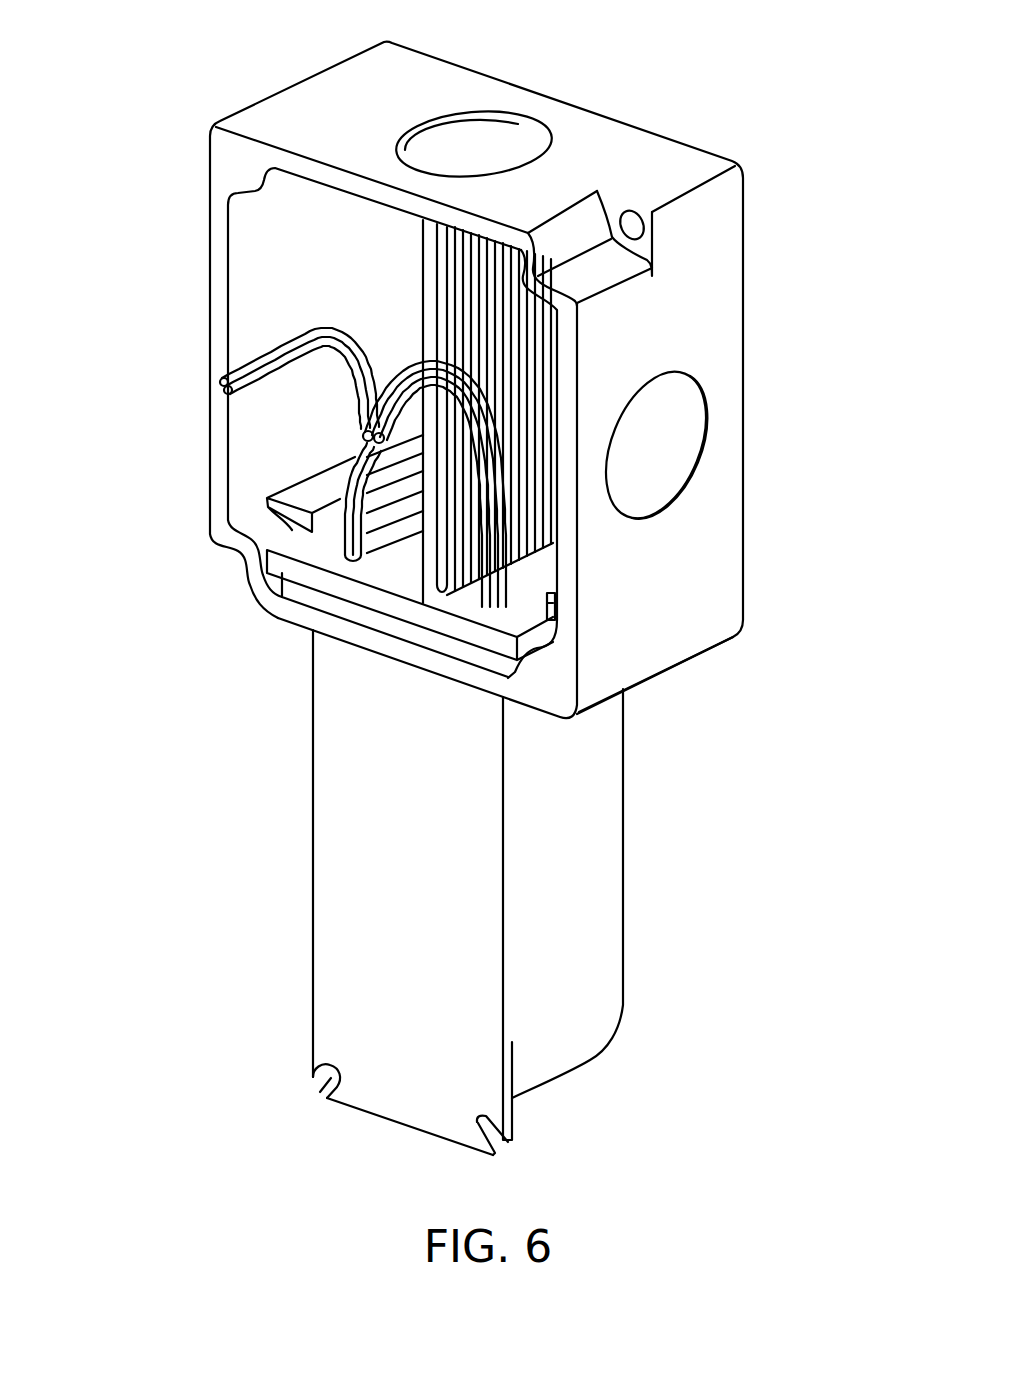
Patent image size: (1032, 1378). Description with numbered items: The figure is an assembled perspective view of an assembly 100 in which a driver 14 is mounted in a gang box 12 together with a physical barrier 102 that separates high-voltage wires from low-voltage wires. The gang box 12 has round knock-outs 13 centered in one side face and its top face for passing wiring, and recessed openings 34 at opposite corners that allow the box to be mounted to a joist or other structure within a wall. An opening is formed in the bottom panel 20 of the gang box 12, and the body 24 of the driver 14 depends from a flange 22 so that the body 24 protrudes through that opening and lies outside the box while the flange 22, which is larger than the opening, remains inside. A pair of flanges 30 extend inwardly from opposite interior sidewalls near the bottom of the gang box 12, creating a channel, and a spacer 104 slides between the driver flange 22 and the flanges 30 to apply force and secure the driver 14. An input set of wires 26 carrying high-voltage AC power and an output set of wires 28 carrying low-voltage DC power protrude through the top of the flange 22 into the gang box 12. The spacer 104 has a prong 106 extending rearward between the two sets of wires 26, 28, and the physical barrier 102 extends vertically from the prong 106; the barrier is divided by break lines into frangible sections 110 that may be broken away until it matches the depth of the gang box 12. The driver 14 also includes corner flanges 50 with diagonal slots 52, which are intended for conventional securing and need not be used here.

The assembly 100 is at (684, 80).
The gang box 12 is at (611, 135).
The round knock-outs 13 is at (495, 137).
The driver 14 is at (605, 843).
The bottom panel 20 is at (270, 590).
The flange 22 is at (375, 623).
The body 24 is at (600, 888).
The input set of wires 26 is at (273, 355).
The output set of wires 28 is at (355, 433).
The flanges 30 is at (290, 498).
The recessed openings 34 is at (635, 224).
The corner flanges 50 is at (318, 1060).
The diagonal slots 52 is at (327, 1080).
The physical barrier 102 is at (420, 331).
The spacer 104 is at (310, 554).
The prong 106 is at (444, 592).
The frangible sections 110 is at (462, 255).